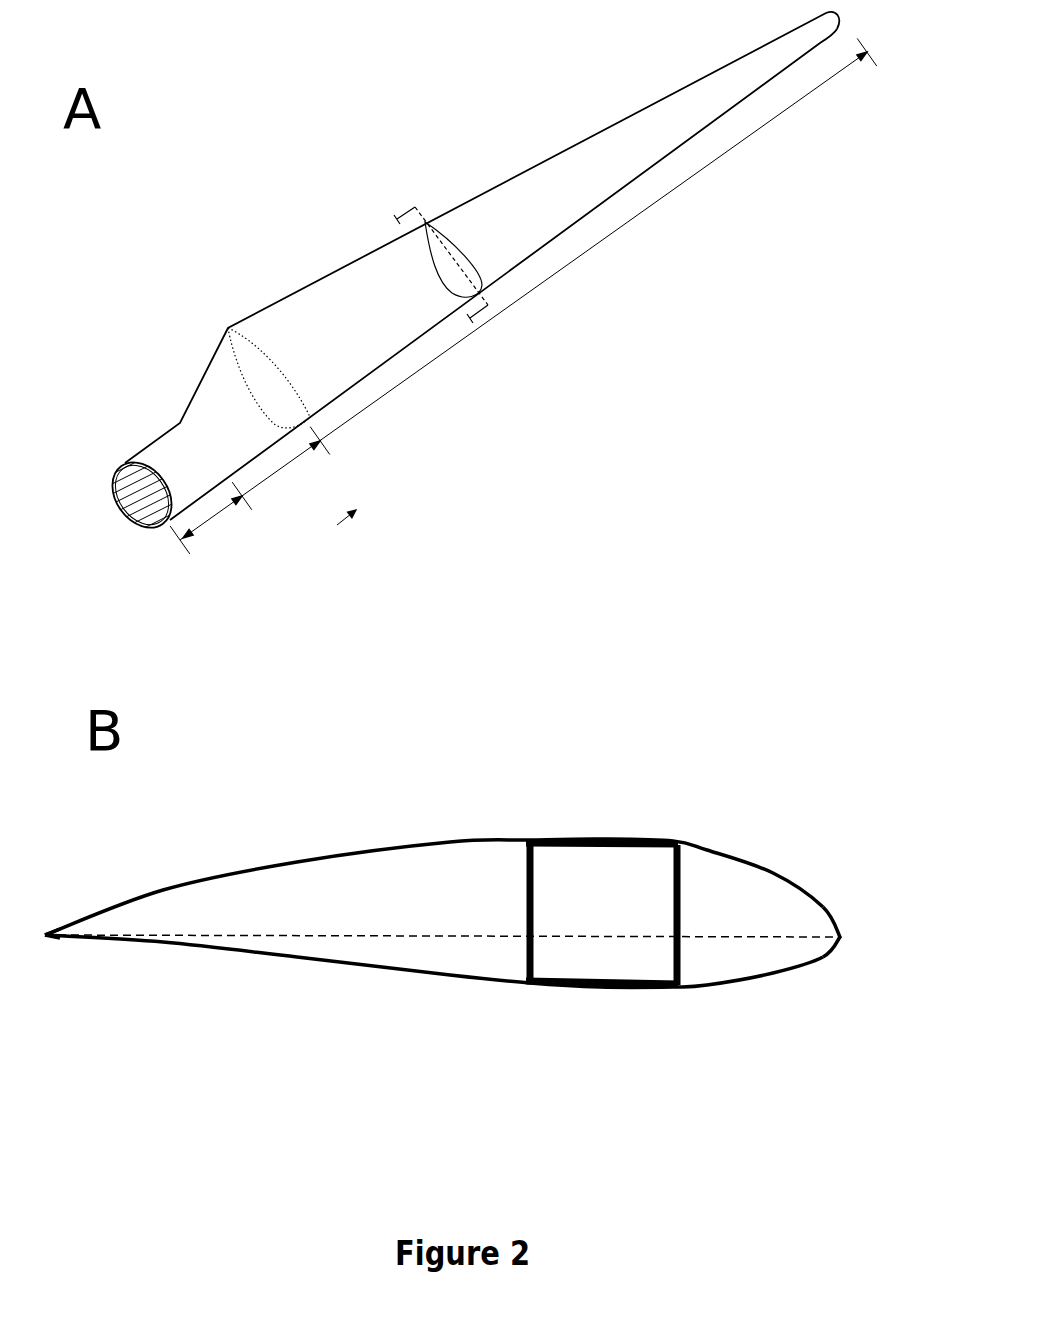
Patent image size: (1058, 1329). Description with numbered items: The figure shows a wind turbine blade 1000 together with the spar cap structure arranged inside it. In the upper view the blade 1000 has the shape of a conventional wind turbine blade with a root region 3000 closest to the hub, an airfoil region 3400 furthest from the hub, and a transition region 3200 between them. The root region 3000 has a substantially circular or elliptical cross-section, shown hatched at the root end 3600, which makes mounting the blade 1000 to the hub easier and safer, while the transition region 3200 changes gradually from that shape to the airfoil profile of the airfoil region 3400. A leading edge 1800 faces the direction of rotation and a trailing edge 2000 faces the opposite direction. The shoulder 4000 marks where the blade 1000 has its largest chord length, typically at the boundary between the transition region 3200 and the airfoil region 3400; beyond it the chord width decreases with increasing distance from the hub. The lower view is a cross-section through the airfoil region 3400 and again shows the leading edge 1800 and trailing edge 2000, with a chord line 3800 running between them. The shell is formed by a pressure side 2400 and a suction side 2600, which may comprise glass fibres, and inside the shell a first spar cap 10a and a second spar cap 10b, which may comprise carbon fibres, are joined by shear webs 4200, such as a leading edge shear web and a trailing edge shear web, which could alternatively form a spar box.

The wind turbine blade 1000 is at (350, 177).
The trailing edge 2000 is at (540, 163).
The leading edge 1800 is at (620, 191).
The root end 3600 is at (142, 457).
The chord line 3800 is at (120, 465).
The shoulder 4000 is at (228, 328).
The airfoil region 3400 is at (540, 284).
The root region 3000 is at (215, 517).
The transition region 3200 is at (285, 467).
The suction side 2600 is at (707, 847).
The pressure side 2400 is at (690, 988).
The second spar cap 10b is at (612, 838).
The first spar cap 10a is at (612, 990).
The shear webs 4200 is at (528, 953).